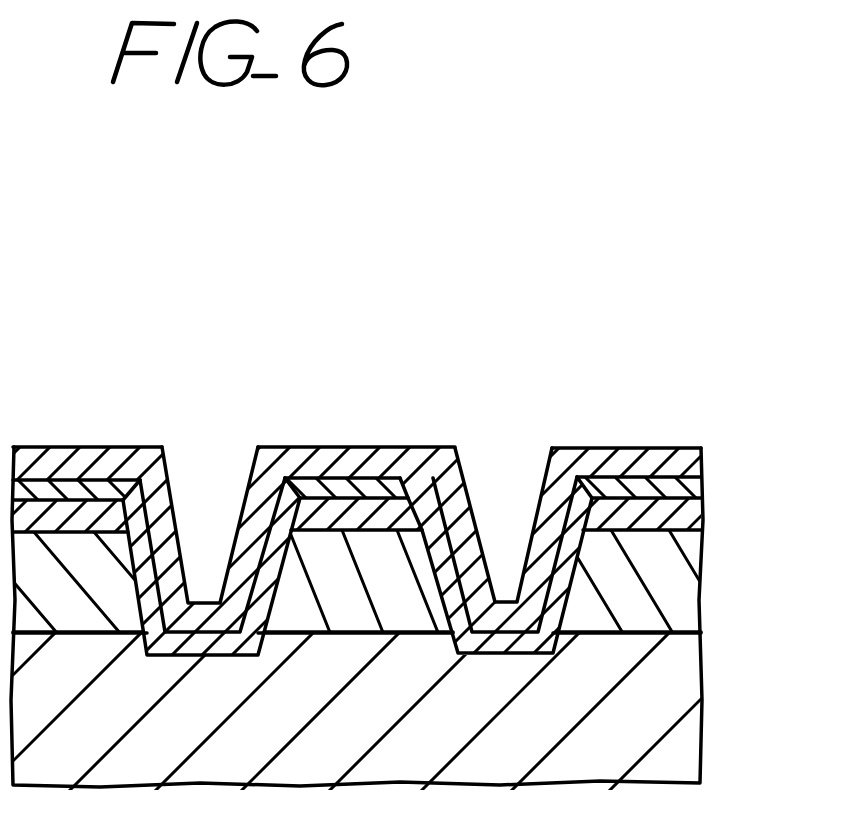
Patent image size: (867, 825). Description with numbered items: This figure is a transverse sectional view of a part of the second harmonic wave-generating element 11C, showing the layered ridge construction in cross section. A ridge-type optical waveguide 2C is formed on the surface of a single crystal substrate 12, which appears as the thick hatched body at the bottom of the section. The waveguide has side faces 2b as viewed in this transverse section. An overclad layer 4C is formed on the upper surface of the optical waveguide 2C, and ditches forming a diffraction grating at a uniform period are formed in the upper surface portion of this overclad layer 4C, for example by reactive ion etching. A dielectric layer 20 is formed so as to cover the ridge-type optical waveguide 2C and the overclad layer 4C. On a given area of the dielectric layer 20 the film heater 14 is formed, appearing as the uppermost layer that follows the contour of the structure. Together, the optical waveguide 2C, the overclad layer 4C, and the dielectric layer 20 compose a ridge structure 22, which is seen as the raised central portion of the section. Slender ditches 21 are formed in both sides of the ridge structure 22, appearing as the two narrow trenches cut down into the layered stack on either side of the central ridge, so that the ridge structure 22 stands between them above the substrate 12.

The second harmonic wave-generating element 11C is at (687, 430).
The single crystal substrate 12 is at (647, 705).
The film heater 14 is at (282, 492).
The dielectric layer 20 is at (47, 490).
The slender ditches 21 is at (205, 500).
The ridge structure 22 is at (374, 438).
The side faces 2b is at (169, 470).
The ridge-type optical waveguide 2C is at (319, 558).
The overclad layer 4C is at (385, 515).